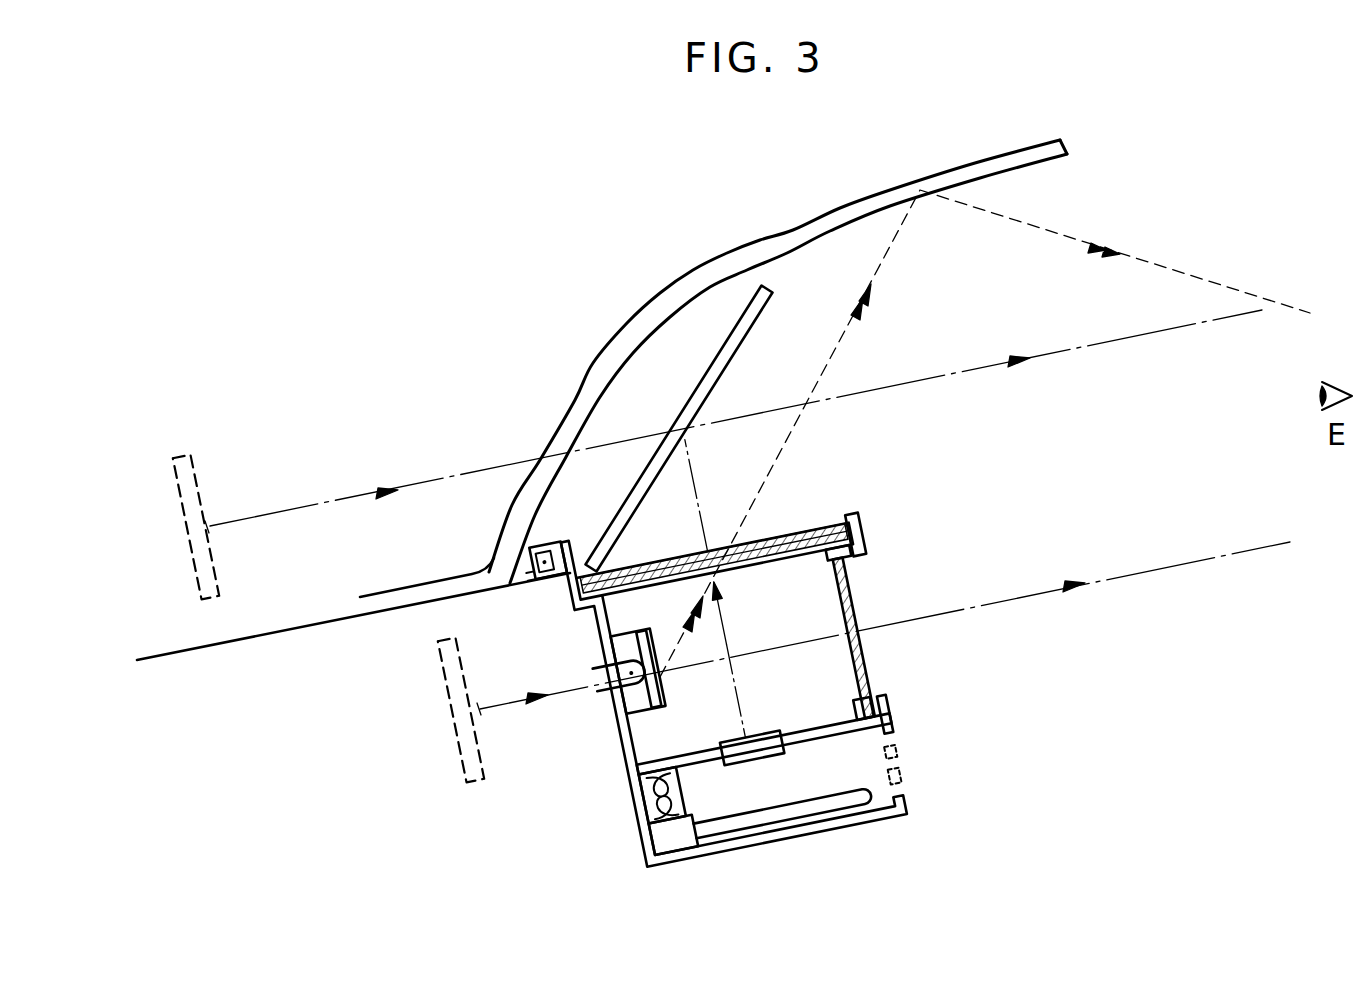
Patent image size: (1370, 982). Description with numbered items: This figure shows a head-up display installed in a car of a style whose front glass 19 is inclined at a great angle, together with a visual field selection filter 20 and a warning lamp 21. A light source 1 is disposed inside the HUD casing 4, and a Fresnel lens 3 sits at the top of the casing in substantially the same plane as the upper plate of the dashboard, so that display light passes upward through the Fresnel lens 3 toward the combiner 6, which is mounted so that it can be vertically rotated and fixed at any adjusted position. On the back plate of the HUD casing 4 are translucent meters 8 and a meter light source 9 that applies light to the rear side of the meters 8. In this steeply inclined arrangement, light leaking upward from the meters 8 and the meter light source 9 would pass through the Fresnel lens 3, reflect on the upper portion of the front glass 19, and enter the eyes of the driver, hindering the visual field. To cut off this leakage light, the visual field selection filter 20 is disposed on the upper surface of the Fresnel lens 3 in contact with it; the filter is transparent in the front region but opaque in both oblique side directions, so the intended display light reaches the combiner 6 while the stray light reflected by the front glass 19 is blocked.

The light source 1 is at (818, 797).
The Fresnel lens 3 is at (866, 535).
The HUD casing 4 is at (828, 837).
The combiner 6 is at (741, 339).
The meters 8 is at (660, 686).
The meter light source 9 is at (633, 632).
The front glass 19 is at (858, 197).
The visual field selection filter 20 is at (800, 528).
The warning lamp 21 is at (567, 545).